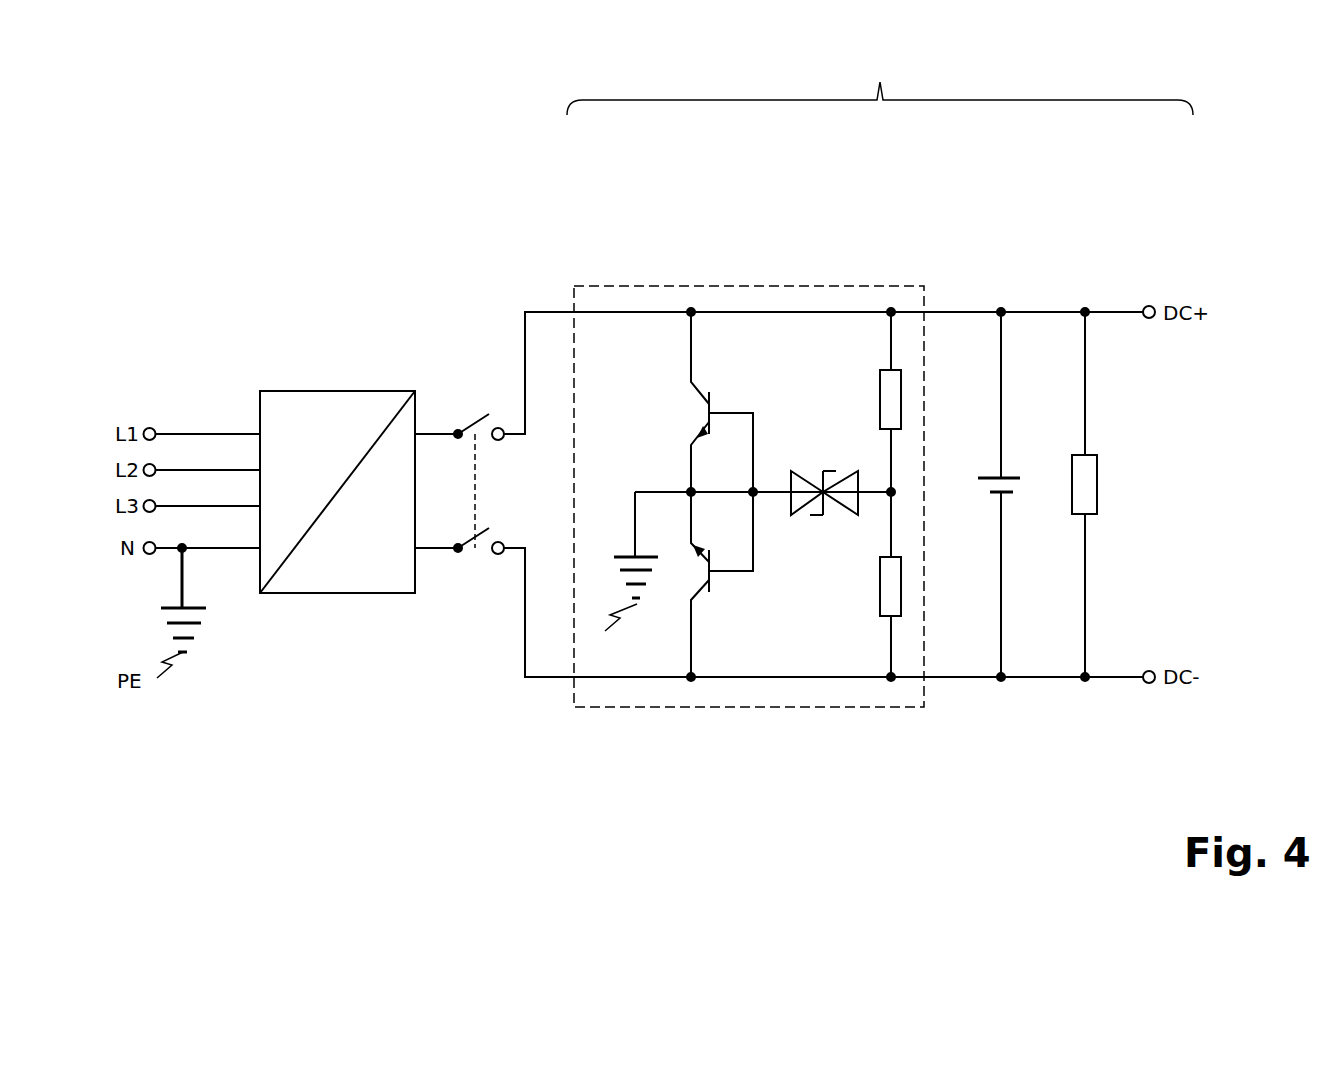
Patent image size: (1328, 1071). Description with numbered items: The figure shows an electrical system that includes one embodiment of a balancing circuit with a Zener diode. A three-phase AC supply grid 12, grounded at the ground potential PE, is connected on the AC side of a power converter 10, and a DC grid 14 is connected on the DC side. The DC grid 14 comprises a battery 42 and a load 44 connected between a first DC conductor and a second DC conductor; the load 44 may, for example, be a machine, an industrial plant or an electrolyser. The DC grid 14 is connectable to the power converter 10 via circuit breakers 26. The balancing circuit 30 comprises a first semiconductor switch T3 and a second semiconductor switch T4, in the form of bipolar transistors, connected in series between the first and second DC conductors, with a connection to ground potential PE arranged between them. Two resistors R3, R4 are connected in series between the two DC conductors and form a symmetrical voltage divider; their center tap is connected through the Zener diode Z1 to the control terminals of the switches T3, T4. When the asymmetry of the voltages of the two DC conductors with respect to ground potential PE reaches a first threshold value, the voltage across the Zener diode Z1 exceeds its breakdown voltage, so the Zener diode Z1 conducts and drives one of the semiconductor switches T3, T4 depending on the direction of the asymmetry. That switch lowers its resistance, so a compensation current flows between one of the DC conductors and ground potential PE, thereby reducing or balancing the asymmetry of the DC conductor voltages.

The power converter 10 is at (330, 391).
The three-phase AC supply grid 12 is at (233, 345).
The DC grid 14 is at (880, 79).
The circuit breakers 26 is at (477, 424).
The balancing circuit 30 is at (758, 283).
The battery 42 is at (1017, 478).
The load 44 is at (1098, 472).
The first semiconductor switch T3 is at (705, 413).
The second semiconductor switch T4 is at (709, 595).
The Zener diode Z1 is at (815, 466).
The resistor R3 is at (878, 392).
The resistor R4 is at (876, 600).